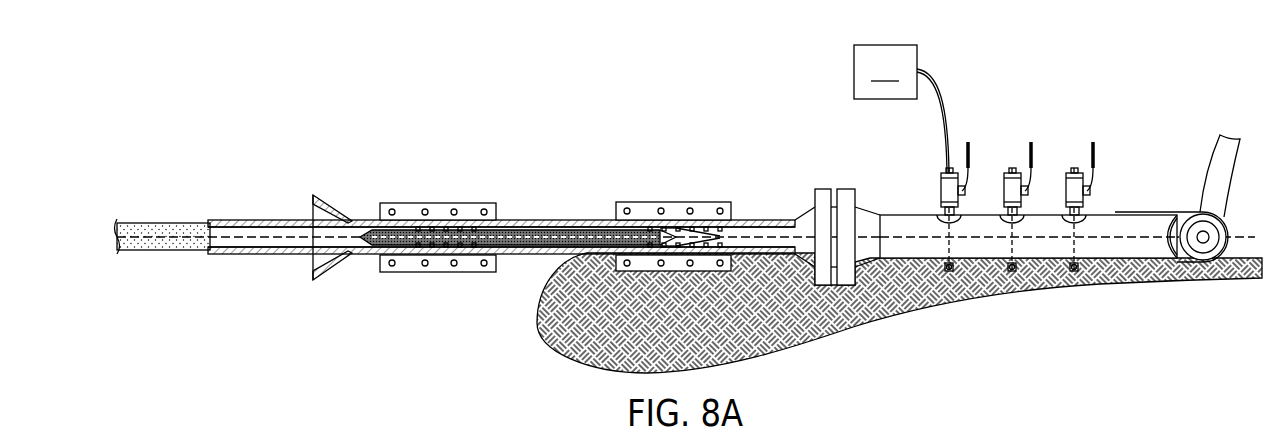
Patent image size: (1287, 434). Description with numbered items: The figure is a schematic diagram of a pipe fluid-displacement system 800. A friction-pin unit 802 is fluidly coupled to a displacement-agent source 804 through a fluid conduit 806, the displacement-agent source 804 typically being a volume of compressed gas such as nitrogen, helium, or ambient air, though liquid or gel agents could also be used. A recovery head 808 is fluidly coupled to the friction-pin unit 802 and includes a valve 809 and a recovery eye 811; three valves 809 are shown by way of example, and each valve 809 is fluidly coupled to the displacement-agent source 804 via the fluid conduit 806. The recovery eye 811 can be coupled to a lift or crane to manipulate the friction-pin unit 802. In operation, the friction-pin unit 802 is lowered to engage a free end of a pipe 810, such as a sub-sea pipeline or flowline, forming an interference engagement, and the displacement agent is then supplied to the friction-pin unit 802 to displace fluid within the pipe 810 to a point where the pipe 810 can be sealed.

The pipe fluid-displacement system 800 is at (1203, 94).
The friction-pin unit 802 is at (755, 220).
The displacement-agent source 804 is at (885, 72).
The fluid conduit 806 is at (945, 103).
The recovery head 808 is at (1117, 210).
The valve 809 is at (952, 212).
The pipe 810 is at (172, 224).
The recovery eye 811 is at (1207, 234).